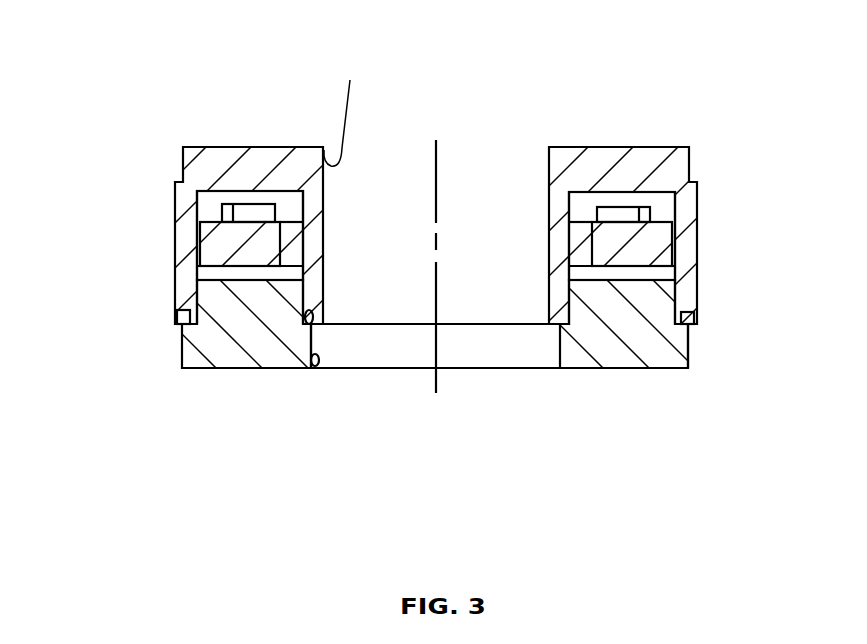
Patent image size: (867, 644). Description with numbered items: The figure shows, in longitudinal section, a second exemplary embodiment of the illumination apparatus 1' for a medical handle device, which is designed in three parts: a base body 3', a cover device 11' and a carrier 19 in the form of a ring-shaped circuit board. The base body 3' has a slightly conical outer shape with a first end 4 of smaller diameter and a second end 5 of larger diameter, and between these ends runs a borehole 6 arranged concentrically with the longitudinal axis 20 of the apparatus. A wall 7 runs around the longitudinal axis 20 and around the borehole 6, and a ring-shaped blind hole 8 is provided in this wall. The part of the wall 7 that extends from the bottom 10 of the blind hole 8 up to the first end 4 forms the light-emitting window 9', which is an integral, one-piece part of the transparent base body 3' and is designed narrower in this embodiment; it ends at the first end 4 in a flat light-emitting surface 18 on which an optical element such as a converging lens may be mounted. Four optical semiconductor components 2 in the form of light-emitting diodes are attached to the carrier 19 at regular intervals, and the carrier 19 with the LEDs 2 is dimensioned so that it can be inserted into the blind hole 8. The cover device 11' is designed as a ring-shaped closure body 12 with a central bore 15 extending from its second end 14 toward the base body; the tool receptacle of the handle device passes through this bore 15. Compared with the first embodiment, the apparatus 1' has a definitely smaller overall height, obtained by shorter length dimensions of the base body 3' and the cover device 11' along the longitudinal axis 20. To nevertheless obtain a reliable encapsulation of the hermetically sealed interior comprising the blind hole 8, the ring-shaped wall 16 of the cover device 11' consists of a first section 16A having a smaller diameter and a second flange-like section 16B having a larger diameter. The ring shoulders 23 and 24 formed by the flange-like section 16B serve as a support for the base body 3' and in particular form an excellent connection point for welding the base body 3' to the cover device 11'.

The illumination apparatus 1' is at (415, 187).
The optical semiconductor components 2 is at (648, 212).
The base body 3' is at (772, 213).
The first end 4 is at (688, 147).
The second end 5 is at (694, 327).
The borehole 6 is at (340, 110).
The wall 7 is at (688, 273).
The blind hole 8 is at (208, 211).
The light-emitting window 9' is at (311, 200).
The bottom 10 is at (203, 205).
The cover device 11' is at (114, 450).
The closure body 12 is at (621, 386).
The second end 14 is at (673, 370).
The central bore 15 is at (318, 310).
The ring-shaped wall 16 is at (587, 357).
The first section 16A is at (212, 303).
The second flange-like section 16B is at (230, 348).
The light-emitting surface 18 is at (591, 147).
The carrier 19 is at (217, 246).
The longitudinal axis 20 is at (436, 140).
The ring shoulder 23 is at (178, 309).
The ring shoulder 24 is at (308, 310).